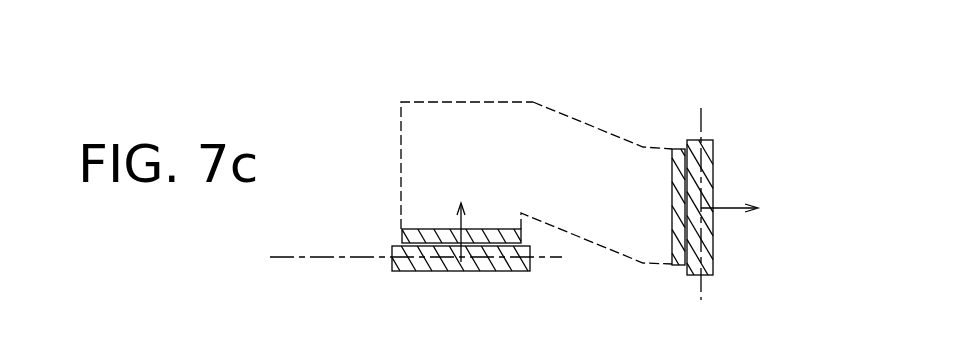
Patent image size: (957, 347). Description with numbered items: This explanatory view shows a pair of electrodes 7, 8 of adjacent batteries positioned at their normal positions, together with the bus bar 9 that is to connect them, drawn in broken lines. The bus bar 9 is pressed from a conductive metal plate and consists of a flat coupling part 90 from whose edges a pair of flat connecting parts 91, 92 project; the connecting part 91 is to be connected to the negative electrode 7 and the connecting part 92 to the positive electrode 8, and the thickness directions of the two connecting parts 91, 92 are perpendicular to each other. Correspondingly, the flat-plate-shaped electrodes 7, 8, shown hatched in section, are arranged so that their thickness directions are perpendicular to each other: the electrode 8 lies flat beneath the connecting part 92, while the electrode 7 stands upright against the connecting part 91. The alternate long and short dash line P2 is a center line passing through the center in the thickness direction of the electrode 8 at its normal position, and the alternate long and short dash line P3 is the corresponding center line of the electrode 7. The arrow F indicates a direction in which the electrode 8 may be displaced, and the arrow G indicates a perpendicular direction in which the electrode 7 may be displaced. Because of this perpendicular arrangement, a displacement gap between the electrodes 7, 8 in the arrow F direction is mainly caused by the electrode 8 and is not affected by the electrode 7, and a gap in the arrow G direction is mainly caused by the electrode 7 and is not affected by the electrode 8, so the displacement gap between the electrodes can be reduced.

The bus bar 9 is at (536, 139).
The coupling part 90 is at (585, 143).
The connecting part 91 is at (682, 150).
The connecting part 92 is at (413, 239).
The positive electrode 8 is at (483, 262).
The negative electrode 7 is at (708, 178).
The center line P2 is at (305, 258).
The center line P3 is at (702, 122).
The arrow F direction F is at (467, 223).
The arrow G direction G is at (728, 213).